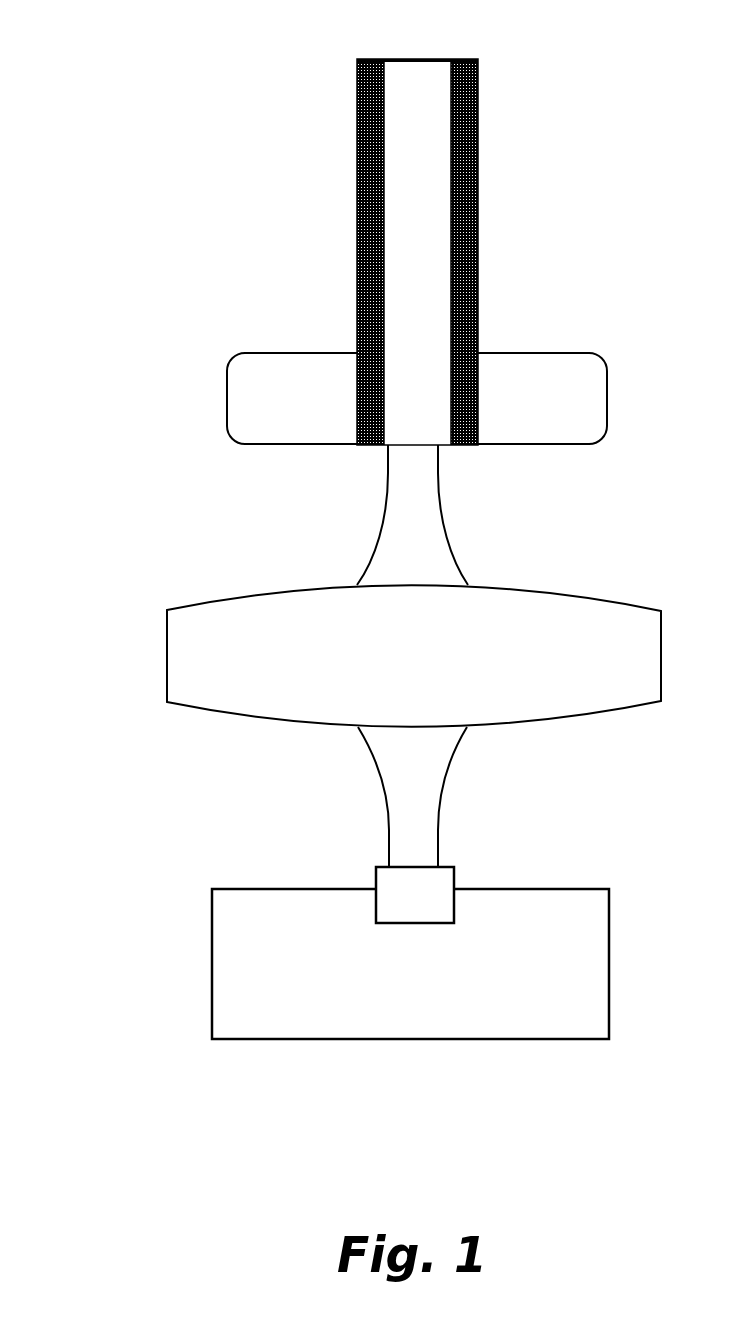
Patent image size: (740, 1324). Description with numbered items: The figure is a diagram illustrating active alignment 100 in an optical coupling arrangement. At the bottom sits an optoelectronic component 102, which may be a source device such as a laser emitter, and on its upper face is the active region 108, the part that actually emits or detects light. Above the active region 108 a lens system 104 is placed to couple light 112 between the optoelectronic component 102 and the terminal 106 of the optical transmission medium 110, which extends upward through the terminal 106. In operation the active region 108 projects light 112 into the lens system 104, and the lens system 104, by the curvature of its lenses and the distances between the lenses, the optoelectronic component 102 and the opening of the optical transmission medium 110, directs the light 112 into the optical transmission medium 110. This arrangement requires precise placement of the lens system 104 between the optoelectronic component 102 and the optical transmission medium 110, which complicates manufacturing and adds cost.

The active alignment 100 is at (110, 119).
The optoelectronic component 102 is at (390, 974).
The lens system 104 is at (393, 666).
The terminal 106 is at (279, 422).
The active region 108 is at (394, 907).
The optical transmission medium 110 is at (400, 212).
The light 112 is at (447, 539).